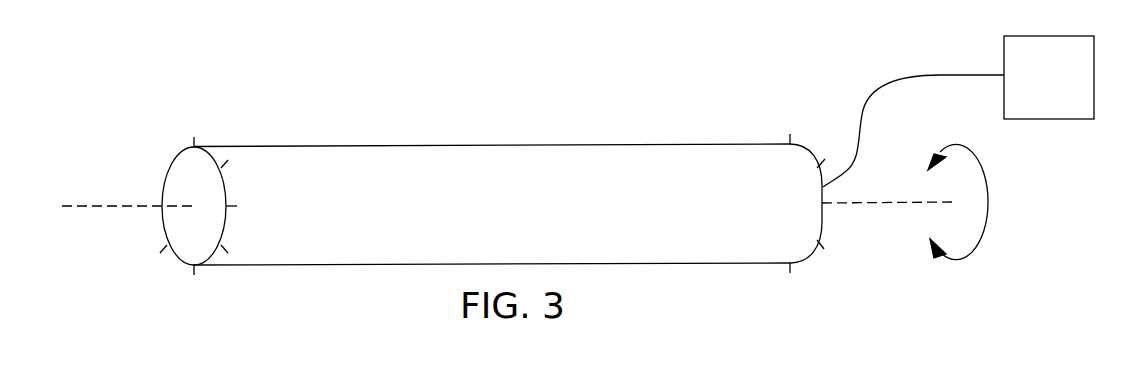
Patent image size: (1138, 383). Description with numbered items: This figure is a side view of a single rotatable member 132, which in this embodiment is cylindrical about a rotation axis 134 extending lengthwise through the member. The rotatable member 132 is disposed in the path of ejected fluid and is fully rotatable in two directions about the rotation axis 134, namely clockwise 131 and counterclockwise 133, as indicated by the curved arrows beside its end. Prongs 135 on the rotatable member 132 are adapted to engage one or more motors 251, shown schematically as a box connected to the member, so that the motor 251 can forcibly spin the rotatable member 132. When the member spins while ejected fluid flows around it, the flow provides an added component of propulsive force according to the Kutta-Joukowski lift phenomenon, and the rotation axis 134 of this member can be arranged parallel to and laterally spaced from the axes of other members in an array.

The clockwise direction 131 is at (942, 237).
The rotatable member 132 is at (713, 264).
The counterclockwise direction 133 is at (942, 170).
The rotation axis 134 is at (85, 206).
The prongs 135 is at (165, 168).
The motor 251 is at (958, 111).